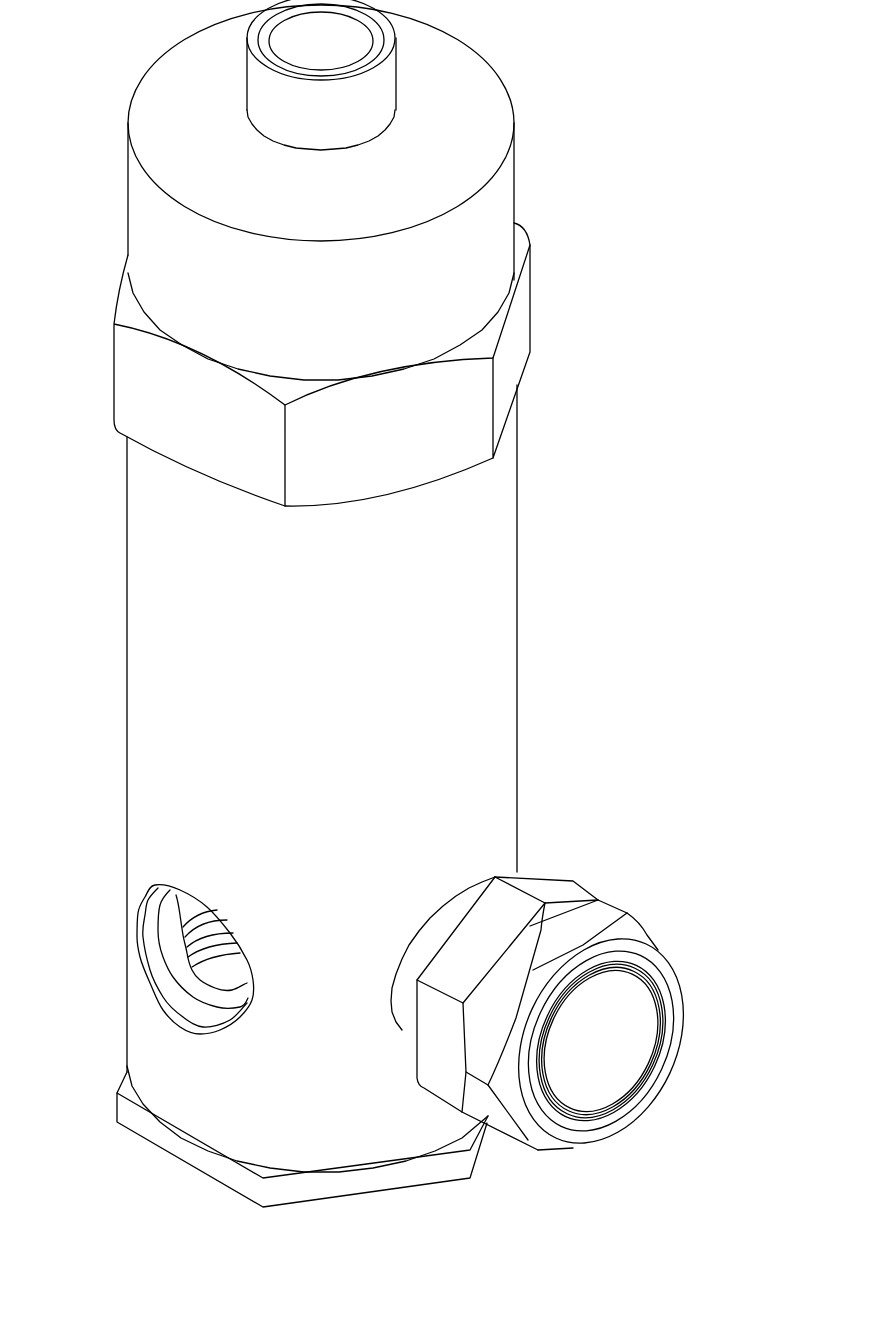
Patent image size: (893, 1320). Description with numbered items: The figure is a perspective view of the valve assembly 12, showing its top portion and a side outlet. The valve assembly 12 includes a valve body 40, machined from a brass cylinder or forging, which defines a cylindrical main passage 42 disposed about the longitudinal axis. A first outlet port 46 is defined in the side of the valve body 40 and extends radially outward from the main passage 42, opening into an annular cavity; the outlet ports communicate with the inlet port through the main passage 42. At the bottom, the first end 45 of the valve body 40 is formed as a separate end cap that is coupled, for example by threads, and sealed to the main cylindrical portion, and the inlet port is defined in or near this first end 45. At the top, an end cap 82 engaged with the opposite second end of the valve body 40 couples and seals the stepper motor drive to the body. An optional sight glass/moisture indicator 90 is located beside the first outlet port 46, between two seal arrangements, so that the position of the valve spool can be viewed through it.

The valve assembly 12 is at (594, 53).
The end cap 82 is at (500, 200).
The valve body 40 is at (500, 642).
The main passage 42 is at (248, 965).
The first outlet port 46 is at (142, 924).
The sight glass/moisture indicator 90 is at (690, 1115).
The first end 45 is at (136, 1172).